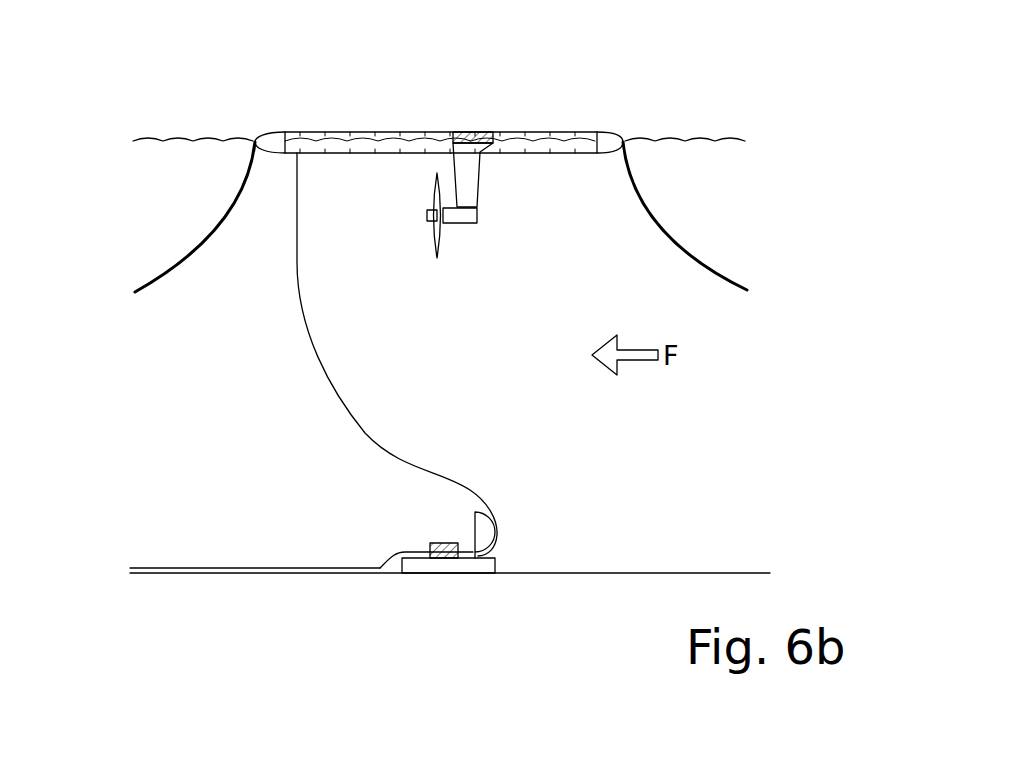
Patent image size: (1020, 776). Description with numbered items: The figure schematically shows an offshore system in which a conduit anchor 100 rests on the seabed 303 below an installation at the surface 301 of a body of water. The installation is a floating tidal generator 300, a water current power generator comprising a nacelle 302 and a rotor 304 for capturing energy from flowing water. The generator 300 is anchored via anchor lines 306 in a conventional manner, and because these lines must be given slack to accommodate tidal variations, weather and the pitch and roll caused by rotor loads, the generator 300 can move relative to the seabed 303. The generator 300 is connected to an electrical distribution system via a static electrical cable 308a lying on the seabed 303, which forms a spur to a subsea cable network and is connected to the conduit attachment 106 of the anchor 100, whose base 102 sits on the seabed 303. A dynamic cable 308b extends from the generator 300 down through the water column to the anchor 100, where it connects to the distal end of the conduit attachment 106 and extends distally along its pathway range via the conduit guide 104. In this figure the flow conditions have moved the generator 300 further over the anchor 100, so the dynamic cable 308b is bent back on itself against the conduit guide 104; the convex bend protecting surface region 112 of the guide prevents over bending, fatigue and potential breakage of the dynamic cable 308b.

The anchor 100 is at (498, 578).
The base plate 102 is at (415, 575).
The conduit guide 104 is at (473, 530).
The conduit attachment 106 is at (445, 575).
The convex bend protecting surface region 112 is at (497, 527).
The floating tidal generator 300 is at (312, 130).
The surface of a body of water 301 is at (187, 138).
The nacelle 302 is at (470, 225).
The seabed 303 is at (705, 573).
The rotor 304 is at (433, 240).
The anchor lines 306 is at (195, 245).
The static electrical cable 308a is at (193, 568).
The dynamic cable 308b is at (365, 433).